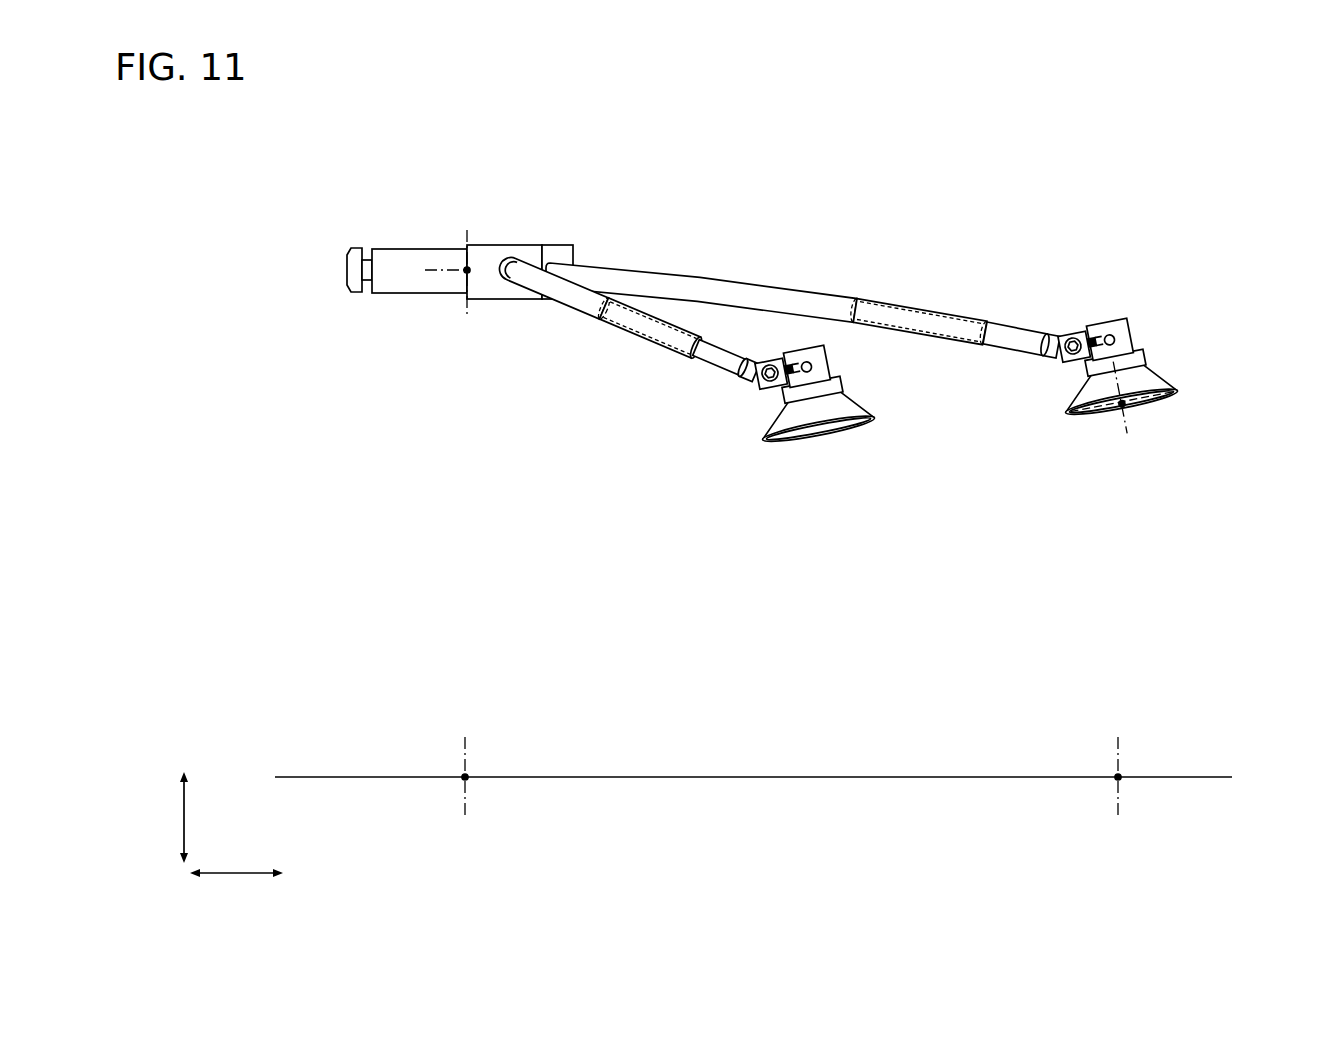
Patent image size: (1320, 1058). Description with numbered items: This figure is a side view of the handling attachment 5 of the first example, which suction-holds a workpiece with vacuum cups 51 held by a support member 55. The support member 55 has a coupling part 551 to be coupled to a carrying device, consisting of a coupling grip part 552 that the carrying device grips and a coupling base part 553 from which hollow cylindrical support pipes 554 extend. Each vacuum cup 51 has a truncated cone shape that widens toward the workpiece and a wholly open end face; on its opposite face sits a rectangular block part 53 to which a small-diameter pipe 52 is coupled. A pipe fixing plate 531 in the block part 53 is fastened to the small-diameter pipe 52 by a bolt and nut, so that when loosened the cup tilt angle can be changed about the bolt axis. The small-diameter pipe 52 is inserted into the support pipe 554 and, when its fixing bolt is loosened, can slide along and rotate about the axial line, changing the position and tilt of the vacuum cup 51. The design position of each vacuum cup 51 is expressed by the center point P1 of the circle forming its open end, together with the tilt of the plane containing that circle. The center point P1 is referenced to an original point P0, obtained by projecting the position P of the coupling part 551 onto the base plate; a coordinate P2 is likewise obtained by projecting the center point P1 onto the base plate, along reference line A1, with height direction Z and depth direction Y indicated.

The handling attachment 5 is at (304, 160).
The vacuum cup 51 is at (843, 407).
The small-diameter pipe 52 is at (712, 350).
The block part 53 is at (1108, 330).
The pipe fixing plate 531 is at (773, 360).
The support member 55 is at (541, 240).
The coupling part 551 is at (395, 247).
The coupling grip part 552 is at (380, 247).
The coupling base part 553 is at (487, 247).
The support pipe 554 is at (712, 283).
The position where coupling part is disposed P is at (466, 273).
The original point P0 is at (463, 779).
The center point P1 is at (1140, 378).
The coordinate P2 is at (1116, 779).
The line A1 is at (338, 779).
The height direction Z is at (173, 817).
The depth direction Y is at (236, 887).